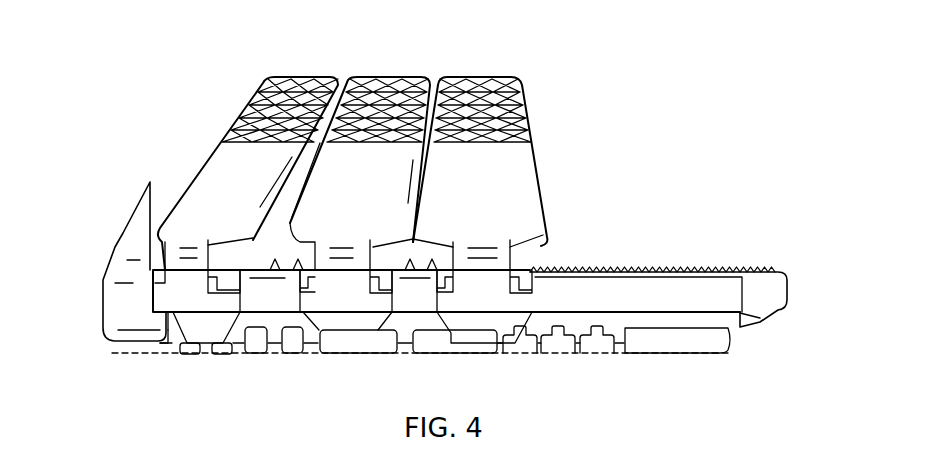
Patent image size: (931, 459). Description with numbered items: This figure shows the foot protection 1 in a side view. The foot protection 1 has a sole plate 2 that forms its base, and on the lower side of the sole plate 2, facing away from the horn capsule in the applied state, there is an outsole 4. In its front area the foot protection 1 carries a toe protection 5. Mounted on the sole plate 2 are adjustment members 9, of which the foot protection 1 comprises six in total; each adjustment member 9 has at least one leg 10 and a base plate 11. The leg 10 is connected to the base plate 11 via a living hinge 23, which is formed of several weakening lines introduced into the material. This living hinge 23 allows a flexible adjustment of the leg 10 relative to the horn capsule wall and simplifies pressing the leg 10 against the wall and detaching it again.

The foot protection 1 is at (745, 82).
The sole plate 2 is at (675, 290).
The outsole 4 is at (682, 338).
The toe protection 5 is at (138, 225).
The adjustment member 9 is at (260, 83).
The leg 10 is at (230, 177).
The base plate 11 is at (190, 277).
The living hinge 23 is at (524, 251).